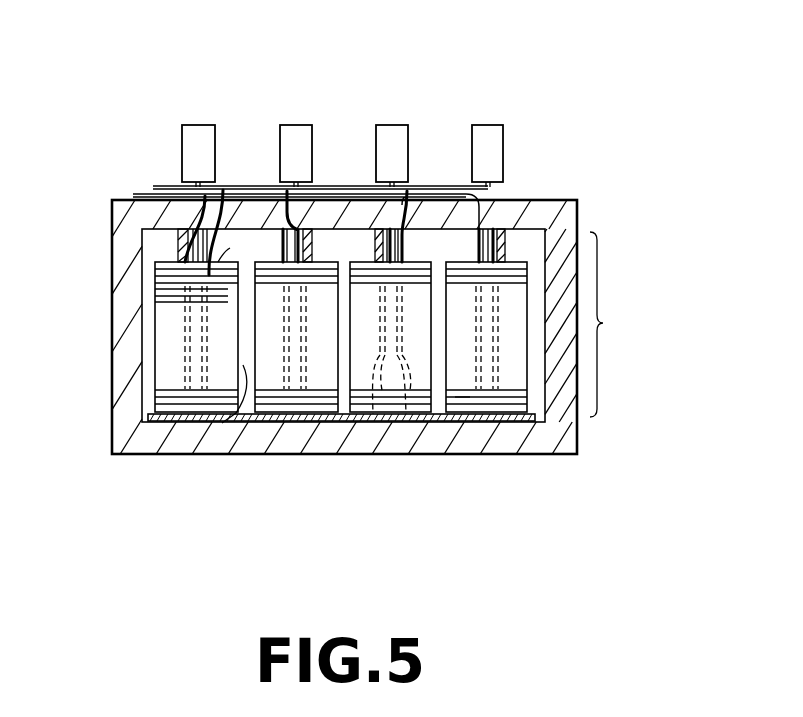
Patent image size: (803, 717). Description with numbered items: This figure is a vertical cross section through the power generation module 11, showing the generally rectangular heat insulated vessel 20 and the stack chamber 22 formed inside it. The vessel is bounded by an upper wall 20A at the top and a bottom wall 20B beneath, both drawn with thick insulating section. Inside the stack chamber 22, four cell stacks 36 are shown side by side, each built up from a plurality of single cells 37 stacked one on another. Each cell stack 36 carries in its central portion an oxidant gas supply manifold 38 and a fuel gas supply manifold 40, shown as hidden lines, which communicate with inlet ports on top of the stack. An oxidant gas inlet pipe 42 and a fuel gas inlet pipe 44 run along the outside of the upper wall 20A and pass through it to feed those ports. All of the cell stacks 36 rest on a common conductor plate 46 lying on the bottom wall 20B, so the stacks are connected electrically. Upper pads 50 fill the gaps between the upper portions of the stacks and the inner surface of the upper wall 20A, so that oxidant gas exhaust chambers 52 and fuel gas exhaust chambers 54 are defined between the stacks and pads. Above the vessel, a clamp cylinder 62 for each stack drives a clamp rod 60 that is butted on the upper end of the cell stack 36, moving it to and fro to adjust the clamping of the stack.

The power generation module 11 is at (374, 97).
The heat insulated vessel 20 is at (308, 435).
The upper wall 20A is at (568, 200).
The bottom wall of housing 20B is at (525, 455).
The stack chamber 22 is at (609, 321).
The cell stack 36 is at (222, 423).
The single cell 37 is at (462, 405).
The oxidant gas supply manifold 38 is at (417, 423).
The fuel gas supply manifold 40 is at (373, 420).
The oxidant gas inlet pipe 42 is at (163, 183).
The fuel gas inlet pipe 44 is at (143, 193).
The conductor plate 46 is at (165, 421).
The upper pad 50 is at (497, 248).
The oxidant gas exhaust chamber 52 is at (157, 245).
The fuel gas exhaust chamber 54 is at (230, 248).
The clamp rod 60 is at (492, 192).
The clamp cylinder 62 is at (200, 133).